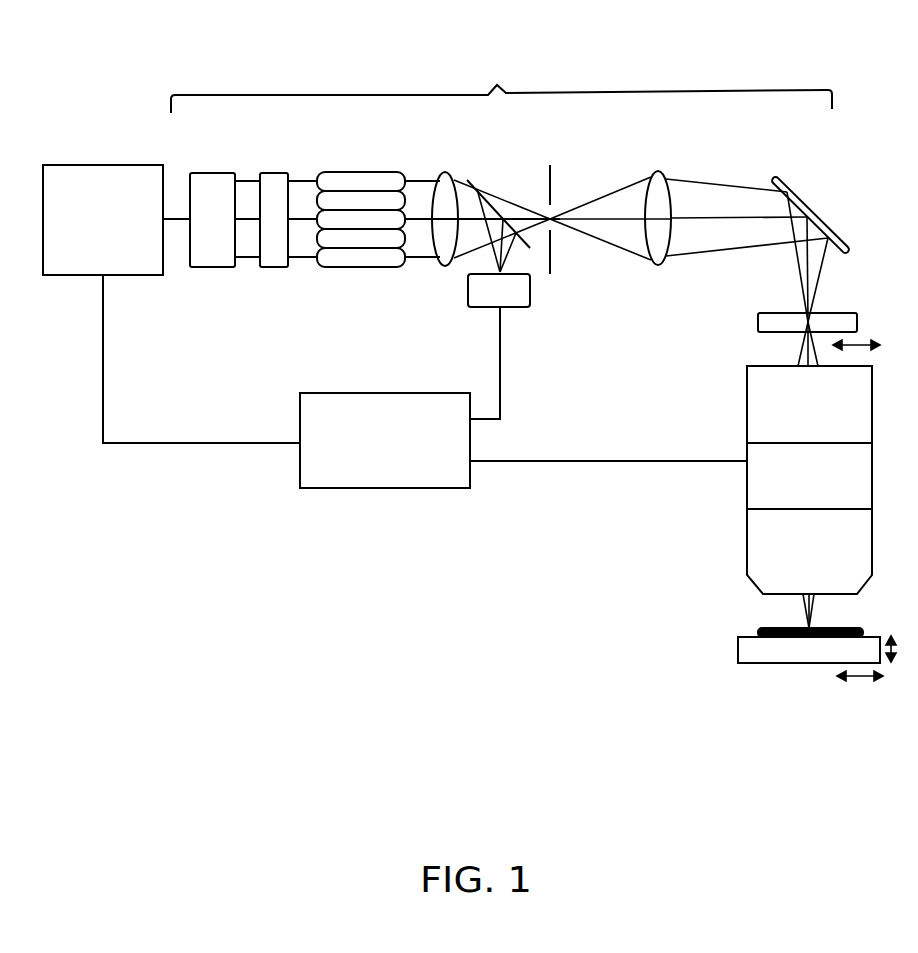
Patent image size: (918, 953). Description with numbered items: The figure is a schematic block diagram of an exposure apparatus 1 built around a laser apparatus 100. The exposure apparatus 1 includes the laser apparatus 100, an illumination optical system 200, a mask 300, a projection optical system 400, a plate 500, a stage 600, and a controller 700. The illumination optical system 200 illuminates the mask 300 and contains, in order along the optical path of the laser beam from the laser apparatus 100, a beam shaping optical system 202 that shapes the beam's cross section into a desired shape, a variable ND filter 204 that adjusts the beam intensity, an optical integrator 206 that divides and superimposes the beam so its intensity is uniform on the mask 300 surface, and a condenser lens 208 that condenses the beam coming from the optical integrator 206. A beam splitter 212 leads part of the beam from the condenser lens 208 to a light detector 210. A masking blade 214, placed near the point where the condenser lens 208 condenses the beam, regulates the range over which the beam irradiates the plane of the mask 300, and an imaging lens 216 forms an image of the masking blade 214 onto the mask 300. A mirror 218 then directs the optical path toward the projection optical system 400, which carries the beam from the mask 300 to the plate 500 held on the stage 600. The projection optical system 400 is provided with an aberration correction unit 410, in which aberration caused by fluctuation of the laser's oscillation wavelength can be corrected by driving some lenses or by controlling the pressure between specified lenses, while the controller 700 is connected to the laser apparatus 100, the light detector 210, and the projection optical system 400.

The exposure apparatus 1 is at (475, 35).
The laser apparatus 100 is at (103, 165).
The illumination optical system 200 is at (501, 85).
The beam shaping optical system 202 is at (209, 173).
The variable ND filter 204 is at (271, 173).
The optical integrator 206 is at (359, 172).
The condenser lens 208 is at (444, 172).
The light detector 210 is at (519, 308).
The beam splitter 212 is at (469, 181).
The masking blade 214 is at (548, 165).
The imaging lens 216 is at (657, 171).
The mirror 218 is at (789, 187).
The mask 300 is at (758, 325).
The projection optical system 400 is at (747, 408).
The aberration correction unit 410 is at (747, 493).
The plate 500 is at (771, 629).
The stage 600 is at (738, 653).
The controller 700 is at (307, 489).